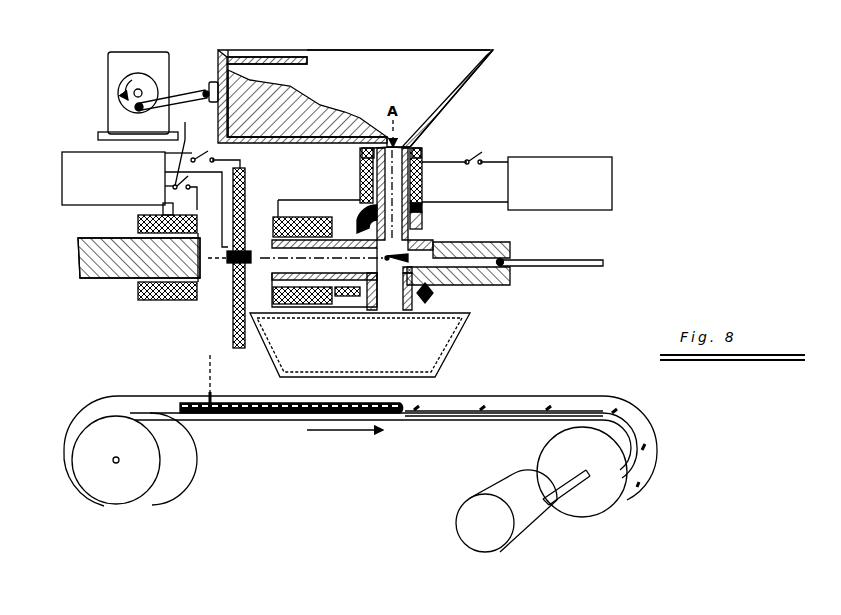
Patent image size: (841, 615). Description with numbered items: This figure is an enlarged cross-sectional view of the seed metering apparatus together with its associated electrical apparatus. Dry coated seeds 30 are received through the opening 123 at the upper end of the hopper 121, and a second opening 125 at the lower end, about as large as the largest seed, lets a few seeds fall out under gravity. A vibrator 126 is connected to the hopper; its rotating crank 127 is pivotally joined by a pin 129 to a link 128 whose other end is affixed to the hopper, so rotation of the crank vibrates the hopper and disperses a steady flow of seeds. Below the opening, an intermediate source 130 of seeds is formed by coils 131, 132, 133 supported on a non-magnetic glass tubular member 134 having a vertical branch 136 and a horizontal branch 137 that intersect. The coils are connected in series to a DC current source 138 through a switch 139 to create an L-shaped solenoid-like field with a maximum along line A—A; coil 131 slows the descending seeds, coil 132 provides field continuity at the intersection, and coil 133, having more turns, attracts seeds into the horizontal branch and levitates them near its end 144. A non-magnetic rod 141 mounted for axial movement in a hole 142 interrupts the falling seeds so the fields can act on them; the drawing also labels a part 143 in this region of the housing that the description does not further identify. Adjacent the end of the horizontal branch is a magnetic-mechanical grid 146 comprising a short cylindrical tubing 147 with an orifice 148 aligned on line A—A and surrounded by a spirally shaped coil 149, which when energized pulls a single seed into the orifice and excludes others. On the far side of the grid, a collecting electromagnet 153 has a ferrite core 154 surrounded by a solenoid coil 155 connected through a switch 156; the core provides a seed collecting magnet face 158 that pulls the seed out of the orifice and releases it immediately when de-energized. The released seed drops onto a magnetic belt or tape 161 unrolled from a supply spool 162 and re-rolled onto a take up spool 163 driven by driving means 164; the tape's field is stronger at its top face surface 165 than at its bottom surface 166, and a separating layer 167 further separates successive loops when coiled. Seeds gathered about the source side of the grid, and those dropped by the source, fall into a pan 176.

The dry coated seeds 30 is at (318, 116).
The hopper 121 is at (221, 49).
The opening 123 is at (312, 54).
The second opening 125 is at (405, 132).
The vibrator 126 is at (132, 48).
The rotating crank 127 is at (125, 80).
The link 128 is at (182, 93).
The pin 129 is at (135, 109).
The intermediate source 130 is at (512, 293).
The coil 131 is at (423, 177).
The coil 132 is at (423, 222).
The coil 133 is at (336, 298).
The tubular member 134 is at (500, 242).
The vertical branch 136 is at (424, 208).
The horizontal branch 137 is at (352, 228).
The DC current source 138 is at (80, 205).
The switch 139 is at (476, 155).
The non-magnetic rod 141 is at (588, 268).
The hole 142 is at (503, 265).
The guide 143 is at (460, 286).
The end 144 is at (290, 305).
The magnetic-mechanical grid 146 is at (237, 350).
The cylindrical tubing 147 is at (220, 298).
The orifice 148 is at (248, 178).
The spirally shaped coil 149 is at (208, 152).
The collecting electromagnet 153 is at (125, 322).
The ferrite core 154 is at (115, 283).
The solenoid coil 155 is at (165, 302).
The switch 156 is at (184, 160).
The seed collecting magnet face 158 is at (199, 302).
The magnetic belt or tape 161 is at (262, 414).
The supply spool 162 is at (146, 500).
The take up spool 163 is at (612, 506).
The driving means 164 is at (512, 530).
The top face surface 165 is at (577, 396).
The bottom surface 166 is at (450, 428).
The separating layer 167 is at (425, 415).
The pan 176 is at (463, 346).